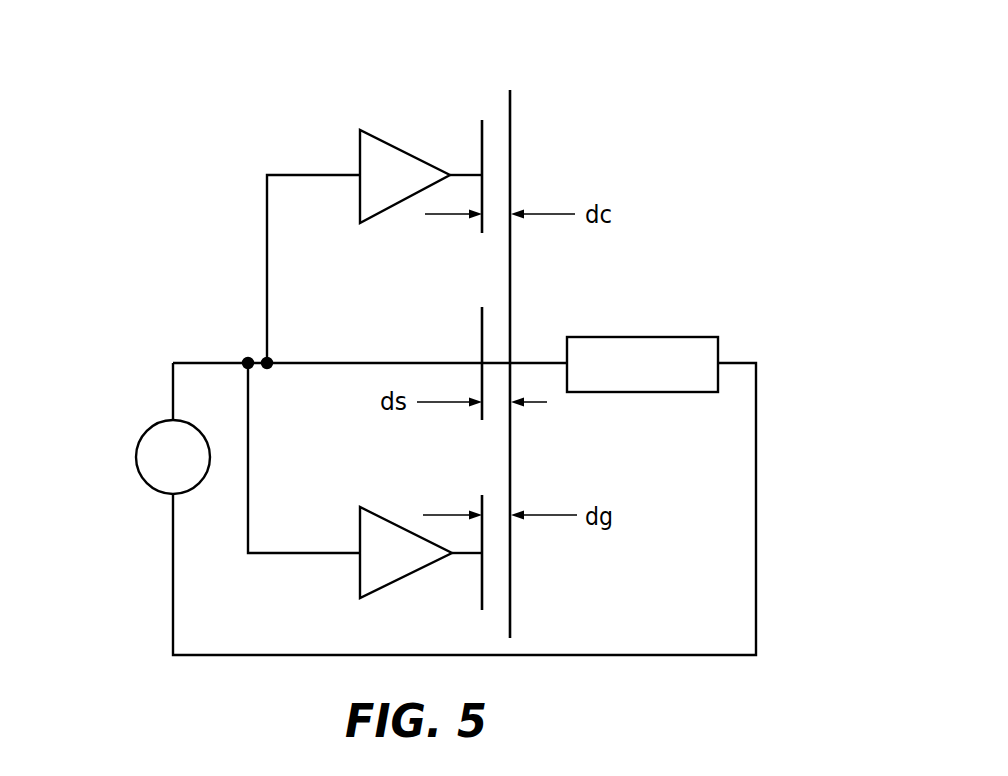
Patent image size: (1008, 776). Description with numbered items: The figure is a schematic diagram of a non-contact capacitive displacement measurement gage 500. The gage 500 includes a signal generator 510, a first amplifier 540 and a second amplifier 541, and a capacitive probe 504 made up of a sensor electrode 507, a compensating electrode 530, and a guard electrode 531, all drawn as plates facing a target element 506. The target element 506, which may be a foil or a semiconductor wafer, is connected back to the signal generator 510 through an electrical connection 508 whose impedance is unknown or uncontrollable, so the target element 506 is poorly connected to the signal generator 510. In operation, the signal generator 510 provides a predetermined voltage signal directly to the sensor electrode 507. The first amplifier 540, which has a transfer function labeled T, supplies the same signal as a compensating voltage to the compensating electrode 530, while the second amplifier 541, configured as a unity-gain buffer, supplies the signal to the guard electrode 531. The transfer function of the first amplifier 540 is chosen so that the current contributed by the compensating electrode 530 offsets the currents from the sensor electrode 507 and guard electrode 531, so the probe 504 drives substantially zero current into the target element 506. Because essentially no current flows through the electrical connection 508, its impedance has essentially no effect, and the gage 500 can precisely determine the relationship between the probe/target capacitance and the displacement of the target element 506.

The non-contact capacitive displacement measurement gage 500 is at (70, 64).
The capacitive probe 504 is at (496, 100).
The target element 506 is at (520, 134).
The sensor electrode 507 is at (472, 317).
The electrical connection 508 is at (665, 325).
The signal generator 510 is at (142, 416).
The compensating electrode 530 is at (472, 125).
The guard electrode 531 is at (470, 600).
The first amplifier 540 is at (400, 212).
The second amplifier 541 is at (401, 518).